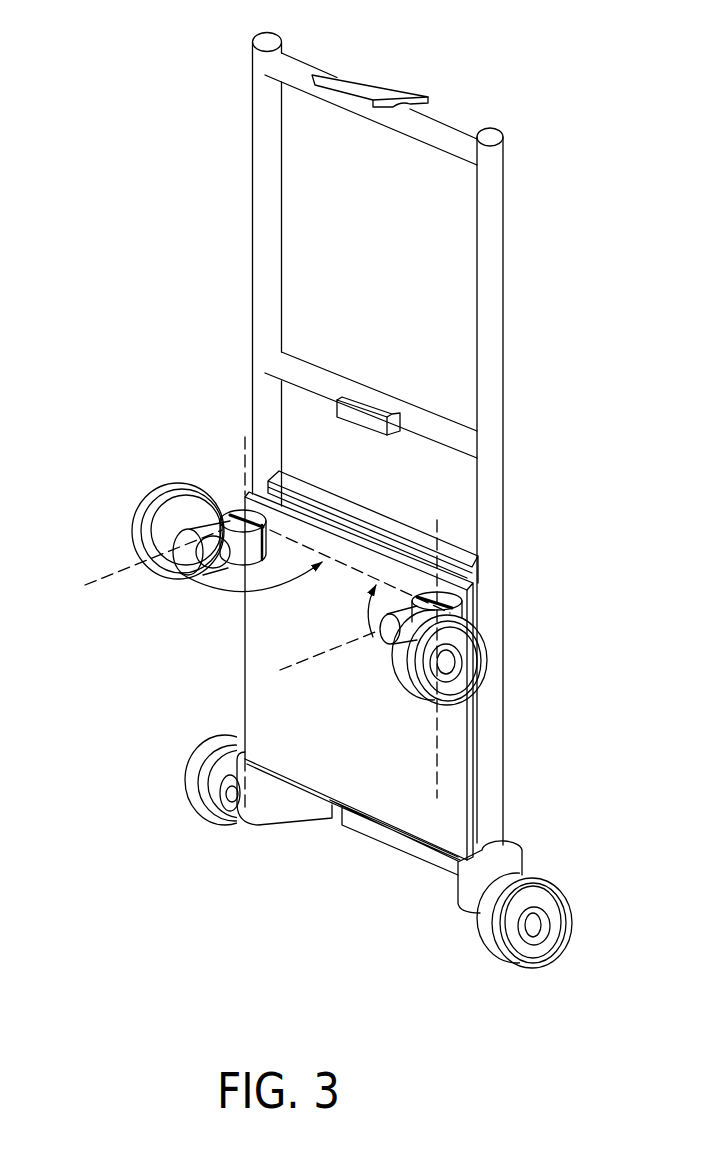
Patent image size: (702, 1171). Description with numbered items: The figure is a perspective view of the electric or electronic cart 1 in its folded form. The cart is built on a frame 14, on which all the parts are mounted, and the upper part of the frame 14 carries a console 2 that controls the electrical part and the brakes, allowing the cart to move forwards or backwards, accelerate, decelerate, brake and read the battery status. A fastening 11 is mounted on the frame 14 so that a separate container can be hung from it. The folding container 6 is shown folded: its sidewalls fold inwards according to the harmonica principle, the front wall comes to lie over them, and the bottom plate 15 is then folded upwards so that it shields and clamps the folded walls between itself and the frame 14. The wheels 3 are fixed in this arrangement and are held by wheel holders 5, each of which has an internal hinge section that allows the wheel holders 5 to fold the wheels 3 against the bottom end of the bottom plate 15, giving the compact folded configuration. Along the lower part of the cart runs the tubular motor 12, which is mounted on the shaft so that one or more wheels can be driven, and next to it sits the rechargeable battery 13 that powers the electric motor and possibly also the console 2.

The electric/electronic cart 1 is at (108, 92).
The console 2 is at (366, 80).
The wheels 3 is at (131, 528).
The wheel holder 5 is at (232, 549).
The folding container 6 is at (172, 687).
The fastening 11 is at (355, 408).
The tubular motor 12 is at (408, 845).
The battery 13 is at (317, 806).
The frame 14 is at (265, 235).
The bottom plate 15 is at (437, 765).